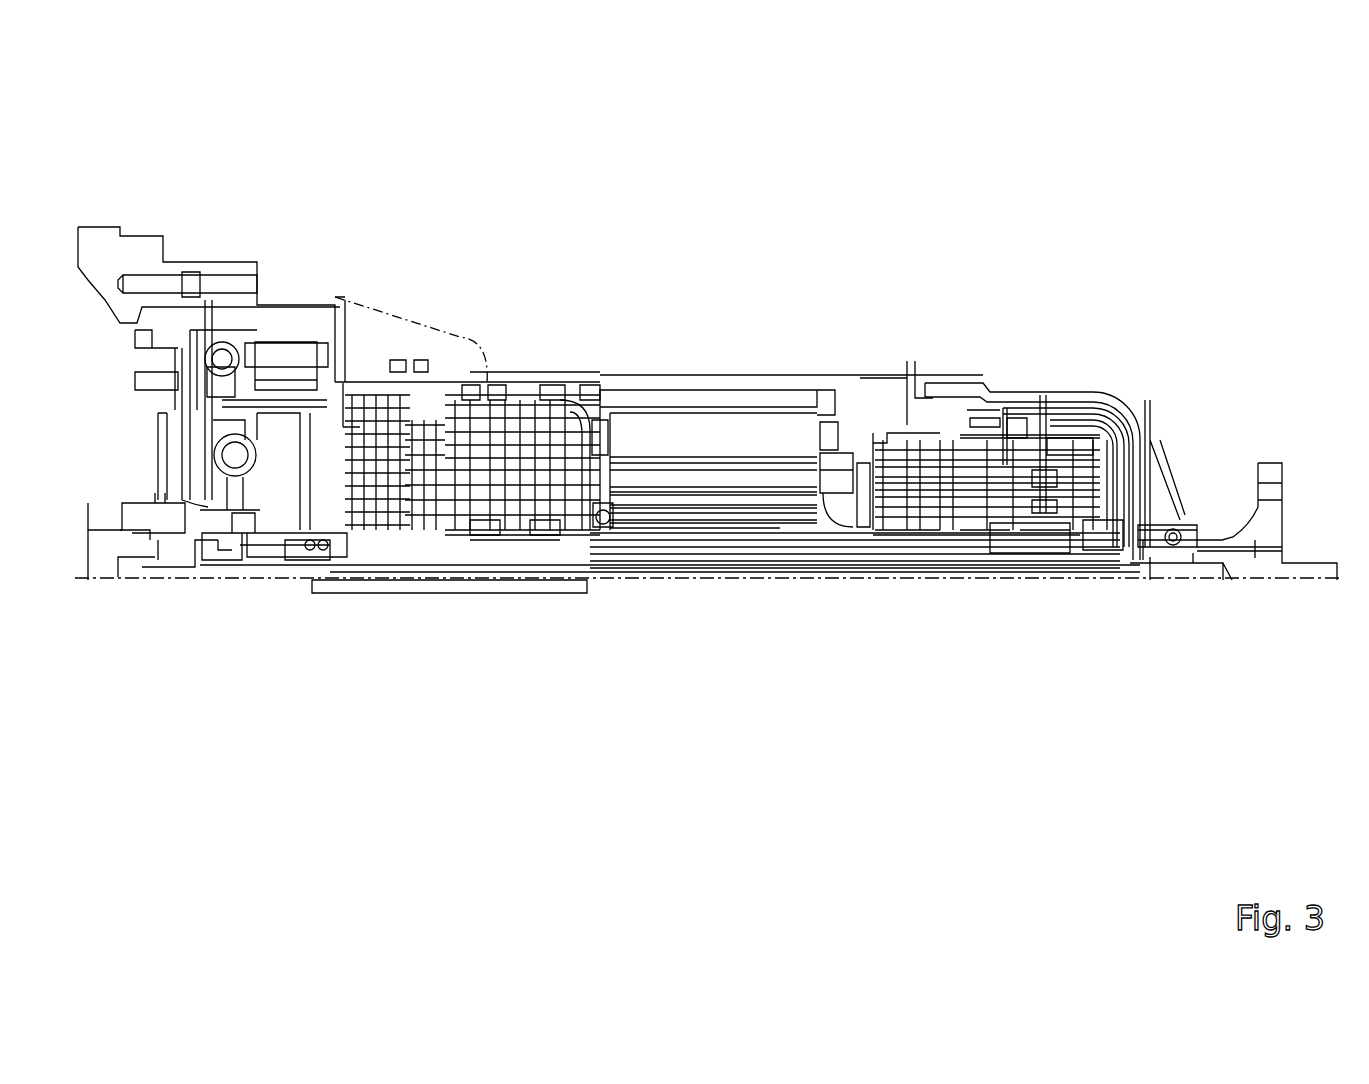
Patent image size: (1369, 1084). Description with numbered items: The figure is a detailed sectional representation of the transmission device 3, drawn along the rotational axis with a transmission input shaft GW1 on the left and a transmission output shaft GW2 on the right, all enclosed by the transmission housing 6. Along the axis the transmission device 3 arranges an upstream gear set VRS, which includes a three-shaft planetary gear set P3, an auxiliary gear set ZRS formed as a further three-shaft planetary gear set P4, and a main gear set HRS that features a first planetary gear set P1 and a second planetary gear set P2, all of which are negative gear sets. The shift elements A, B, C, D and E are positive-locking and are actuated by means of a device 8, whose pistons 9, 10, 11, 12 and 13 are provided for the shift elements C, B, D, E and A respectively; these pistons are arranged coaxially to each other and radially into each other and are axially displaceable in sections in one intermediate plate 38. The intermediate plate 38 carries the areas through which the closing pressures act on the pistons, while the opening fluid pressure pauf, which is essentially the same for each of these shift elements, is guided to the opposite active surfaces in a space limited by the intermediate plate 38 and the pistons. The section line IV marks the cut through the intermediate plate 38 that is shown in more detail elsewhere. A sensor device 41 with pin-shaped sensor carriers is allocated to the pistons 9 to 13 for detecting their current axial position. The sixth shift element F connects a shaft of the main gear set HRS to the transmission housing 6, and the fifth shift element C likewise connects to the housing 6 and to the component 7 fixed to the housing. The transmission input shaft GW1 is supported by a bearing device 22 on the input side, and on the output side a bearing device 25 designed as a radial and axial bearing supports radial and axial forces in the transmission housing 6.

The transmission device 3 is at (789, 266).
The transmission housing 6 is at (1003, 393).
The component fixed to the housing 7 is at (497, 383).
The device 8 is at (422, 345).
The piston 9 is at (283, 367).
The piston 10 is at (230, 343).
The piston 11 is at (218, 527).
The piston 12 is at (257, 533).
The piston 13 is at (365, 535).
The bearing device 22 is at (370, 540).
The bearing device 25 is at (1180, 520).
The intermediate plate 38 is at (360, 346).
The sensor device 41 is at (487, 383).
The fluid pressure pauf is at (402, 346).
The section IV is at (485, 370).
The first shift element A is at (480, 530).
The third shift element B is at (588, 383).
The fifth shift element C is at (560, 380).
The fourth shift element D is at (672, 390).
The second shift element E is at (545, 525).
The sixth shift element F is at (922, 418).
The transmission input shaft GW1 is at (300, 540).
The transmission output shaft GW2 is at (1167, 560).
The first planetary gear set P1 is at (989, 613).
The second planetary gear set P2 is at (1049, 613).
The three-shaft planetary gear set P3 is at (511, 613).
The three-shaft planetary gear set P4 is at (907, 615).
The upstream gear set VRS is at (522, 639).
The auxiliary gear set ZRS is at (916, 639).
The main gear set HRS is at (1067, 682).